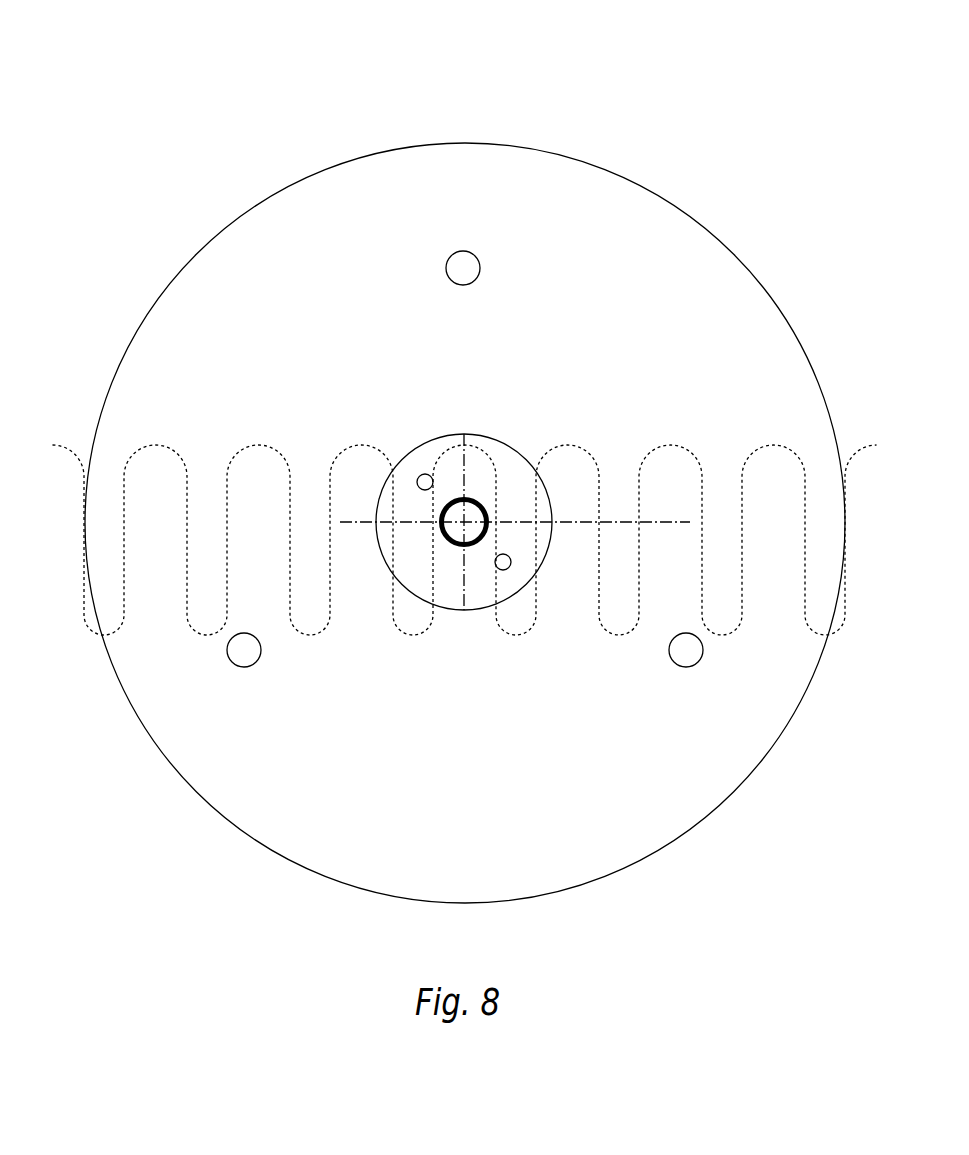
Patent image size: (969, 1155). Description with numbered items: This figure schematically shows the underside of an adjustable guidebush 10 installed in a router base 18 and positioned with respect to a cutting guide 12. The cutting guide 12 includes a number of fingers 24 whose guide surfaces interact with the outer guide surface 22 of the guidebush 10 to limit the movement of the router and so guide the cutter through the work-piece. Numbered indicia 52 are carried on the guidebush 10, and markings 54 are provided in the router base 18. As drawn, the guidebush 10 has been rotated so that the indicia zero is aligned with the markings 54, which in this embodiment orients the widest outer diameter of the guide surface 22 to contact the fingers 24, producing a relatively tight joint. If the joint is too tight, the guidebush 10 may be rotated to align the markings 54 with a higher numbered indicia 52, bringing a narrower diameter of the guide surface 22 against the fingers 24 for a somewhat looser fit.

The adjustable guidebush 10 is at (423, 455).
The cutting guide 12 is at (562, 637).
The router base 18 is at (768, 335).
The guide surface 22 is at (453, 497).
The fingers 24 is at (617, 655).
The indicia 52 is at (512, 423).
The markings 54 is at (565, 522).